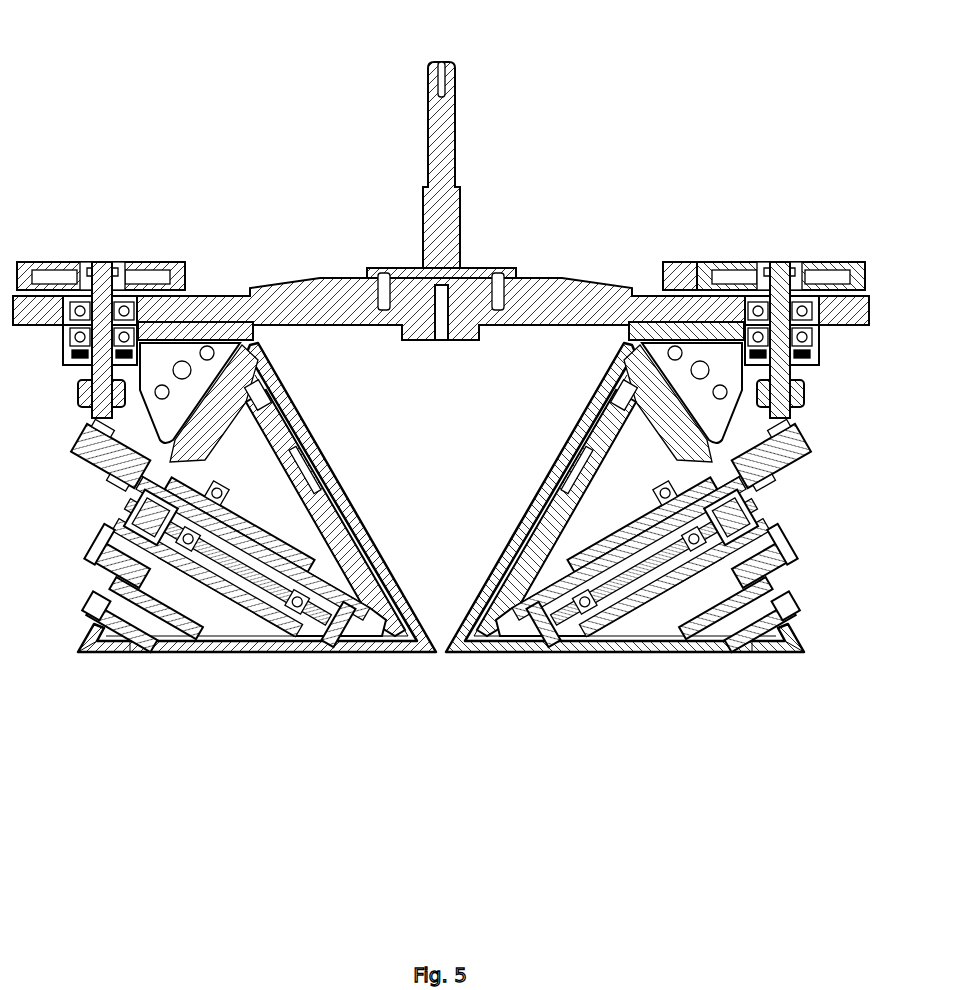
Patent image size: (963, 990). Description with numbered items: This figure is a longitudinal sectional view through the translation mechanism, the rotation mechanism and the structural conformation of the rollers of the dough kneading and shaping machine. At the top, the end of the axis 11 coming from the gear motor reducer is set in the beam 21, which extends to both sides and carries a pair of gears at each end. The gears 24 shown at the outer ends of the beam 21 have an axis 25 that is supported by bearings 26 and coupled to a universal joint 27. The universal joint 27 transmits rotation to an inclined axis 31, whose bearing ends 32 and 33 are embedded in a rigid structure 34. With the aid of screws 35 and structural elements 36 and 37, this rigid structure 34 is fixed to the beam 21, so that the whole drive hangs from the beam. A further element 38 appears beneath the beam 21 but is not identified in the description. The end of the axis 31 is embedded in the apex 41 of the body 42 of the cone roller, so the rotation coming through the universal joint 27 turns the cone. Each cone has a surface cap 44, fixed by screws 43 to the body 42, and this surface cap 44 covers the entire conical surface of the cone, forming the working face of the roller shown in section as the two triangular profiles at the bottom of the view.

The axis 11 is at (437, 100).
The beam 21 is at (265, 295).
The gears 24 is at (60, 262).
The axis 25 is at (788, 378).
The bearings 26 is at (822, 350).
The universal joint 27 is at (770, 452).
The axis 31 is at (610, 563).
The bearing end 32 is at (685, 560).
The bearing end 33 is at (560, 610).
The rigid structure 34 is at (640, 590).
The screws 35 is at (780, 548).
The structural element 36 is at (753, 532).
The structural element 37 is at (148, 362).
The spacer block 38 is at (200, 330).
The apex 41 is at (500, 642).
The body 42 is at (180, 652).
The screws 43 is at (793, 613).
The surface cap 44 is at (290, 652).